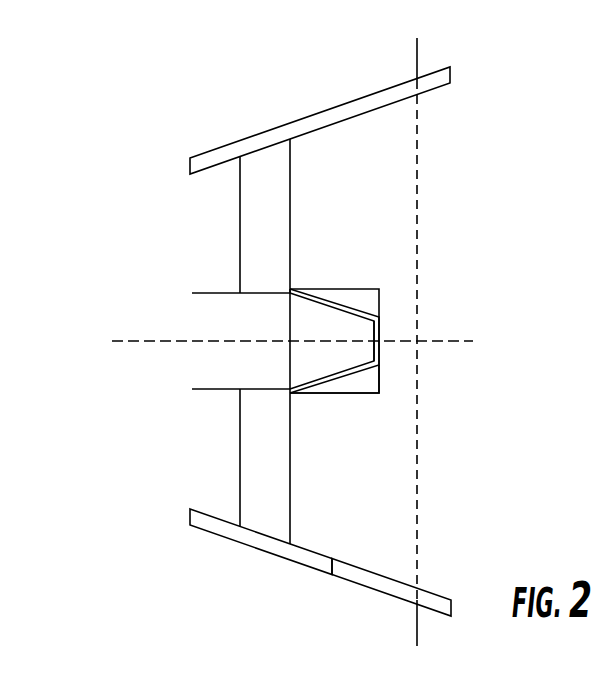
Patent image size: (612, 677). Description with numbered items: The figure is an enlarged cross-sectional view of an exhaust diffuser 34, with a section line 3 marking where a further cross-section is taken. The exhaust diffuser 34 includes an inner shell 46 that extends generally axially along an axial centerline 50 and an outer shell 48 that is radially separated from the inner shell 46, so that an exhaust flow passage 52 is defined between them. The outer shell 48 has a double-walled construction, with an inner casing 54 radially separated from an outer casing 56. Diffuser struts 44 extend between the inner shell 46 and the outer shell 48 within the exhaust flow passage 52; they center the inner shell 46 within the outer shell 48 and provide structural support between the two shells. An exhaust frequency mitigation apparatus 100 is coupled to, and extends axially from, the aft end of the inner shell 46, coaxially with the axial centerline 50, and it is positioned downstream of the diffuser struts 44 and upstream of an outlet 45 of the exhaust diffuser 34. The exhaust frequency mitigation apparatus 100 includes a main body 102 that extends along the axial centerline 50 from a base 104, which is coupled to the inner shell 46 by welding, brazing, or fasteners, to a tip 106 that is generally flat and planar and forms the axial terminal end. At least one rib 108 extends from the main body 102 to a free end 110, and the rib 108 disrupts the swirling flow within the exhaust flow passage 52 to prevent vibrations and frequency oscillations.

The section line 3- 3 is at (417, 38).
The exhaust diffuser 34 is at (98, 118).
The diffuser struts 44 is at (243, 213).
The outlet 45 is at (468, 125).
The inner shell 46 is at (218, 292).
The outer shell 48 is at (320, 116).
The axial centerline 50 is at (145, 340).
The exhaust flow passage 52 is at (372, 511).
The inner casing 54 is at (350, 562).
The outer casing 56 is at (313, 568).
The exhaust frequency mitigation apparatus 100 is at (384, 333).
The main body 102 is at (331, 301).
The base 104 is at (290, 288).
The tip 106 is at (383, 328).
The rib 108 is at (370, 386).
The free end 110 is at (320, 395).